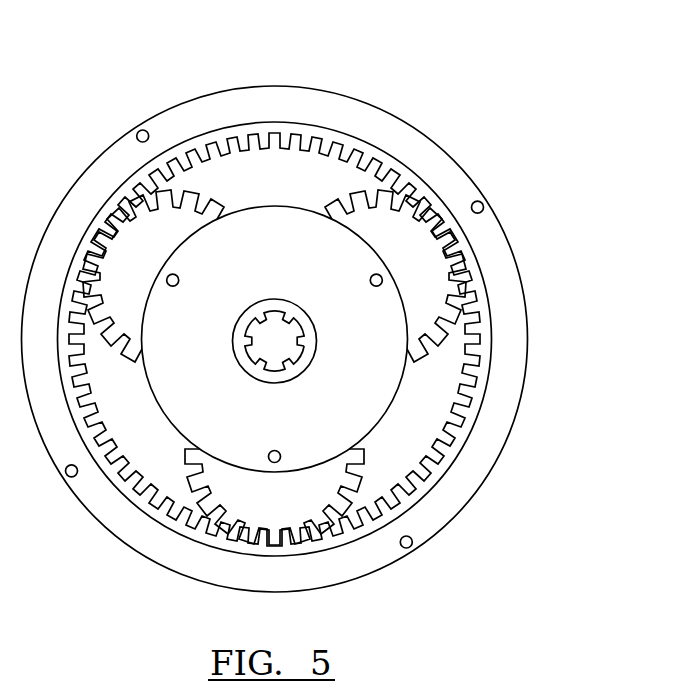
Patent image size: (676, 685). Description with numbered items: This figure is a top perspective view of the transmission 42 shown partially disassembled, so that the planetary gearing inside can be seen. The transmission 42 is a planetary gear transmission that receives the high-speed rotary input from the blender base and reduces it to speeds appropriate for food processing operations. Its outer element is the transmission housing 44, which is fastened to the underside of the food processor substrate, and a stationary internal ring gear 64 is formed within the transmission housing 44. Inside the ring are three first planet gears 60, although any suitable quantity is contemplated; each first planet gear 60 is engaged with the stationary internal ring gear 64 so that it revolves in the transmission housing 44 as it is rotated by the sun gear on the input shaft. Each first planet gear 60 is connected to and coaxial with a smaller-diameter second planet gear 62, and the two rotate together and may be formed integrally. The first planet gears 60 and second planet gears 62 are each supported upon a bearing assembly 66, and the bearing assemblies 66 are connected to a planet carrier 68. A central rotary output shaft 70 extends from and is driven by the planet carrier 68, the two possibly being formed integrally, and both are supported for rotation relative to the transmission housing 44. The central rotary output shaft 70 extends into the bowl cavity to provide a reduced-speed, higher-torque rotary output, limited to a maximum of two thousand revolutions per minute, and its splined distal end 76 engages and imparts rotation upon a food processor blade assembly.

The transmission 42 is at (312, 344).
The transmission housing 44 is at (527, 380).
The first planet gears 60 is at (330, 303).
The second planet gears 62 is at (408, 267).
The stationary internal ring gear 64 is at (333, 143).
The bearing assembly 66 is at (272, 463).
The planet carrier 68 is at (335, 413).
The central rotary output shaft 70 is at (313, 355).
The distal end 76 is at (274, 333).